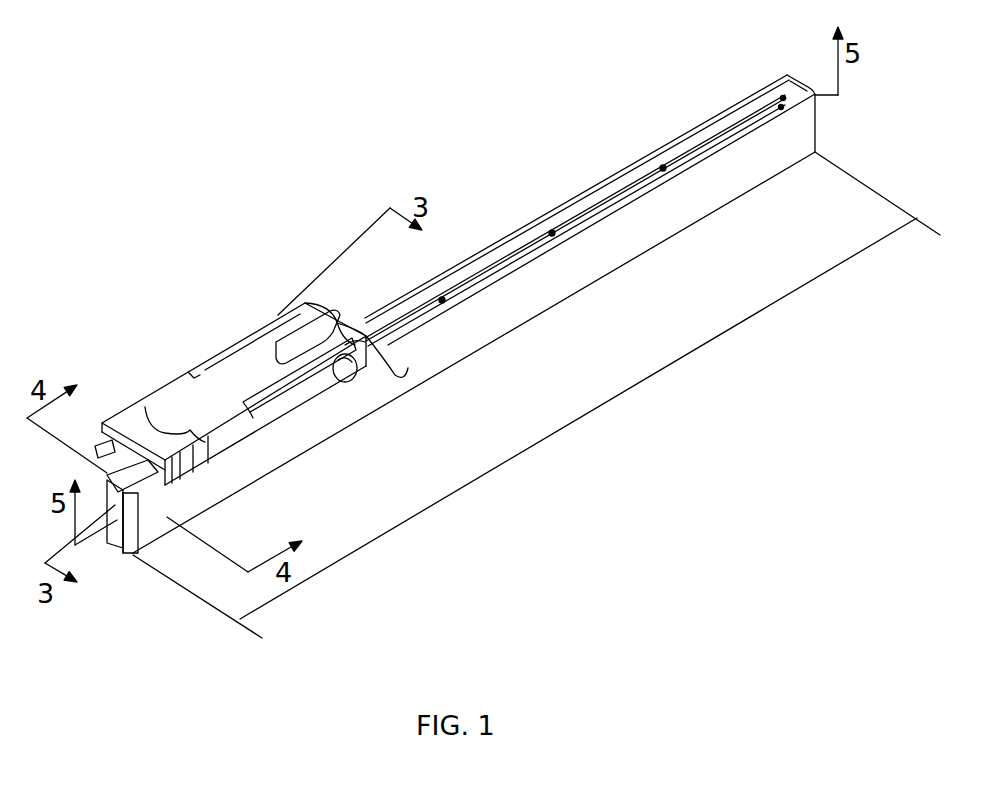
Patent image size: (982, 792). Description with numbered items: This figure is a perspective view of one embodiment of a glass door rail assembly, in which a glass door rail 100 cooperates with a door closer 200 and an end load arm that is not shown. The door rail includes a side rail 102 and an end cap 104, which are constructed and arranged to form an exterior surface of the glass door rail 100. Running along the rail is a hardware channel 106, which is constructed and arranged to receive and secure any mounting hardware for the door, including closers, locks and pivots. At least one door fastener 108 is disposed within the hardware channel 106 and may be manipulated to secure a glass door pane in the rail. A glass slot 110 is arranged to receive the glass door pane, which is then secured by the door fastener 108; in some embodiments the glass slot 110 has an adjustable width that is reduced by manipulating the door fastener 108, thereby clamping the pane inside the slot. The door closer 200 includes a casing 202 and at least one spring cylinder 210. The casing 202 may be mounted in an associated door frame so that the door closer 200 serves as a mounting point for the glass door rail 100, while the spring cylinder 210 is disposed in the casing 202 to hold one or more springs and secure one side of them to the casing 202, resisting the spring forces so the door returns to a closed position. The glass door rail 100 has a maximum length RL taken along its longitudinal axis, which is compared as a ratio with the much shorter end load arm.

The glass door rail 100 is at (508, 189).
The side rail 102 is at (562, 285).
The end cap 104 is at (133, 557).
The hardware channel 106 is at (406, 308).
The door fastener 108 is at (665, 172).
The glass slot 110 is at (117, 545).
The door closer 200 is at (193, 310).
The casing 202 is at (263, 418).
The spring cylinder 210 is at (390, 357).
The maximum length of the glass door rail RL is at (536, 395).